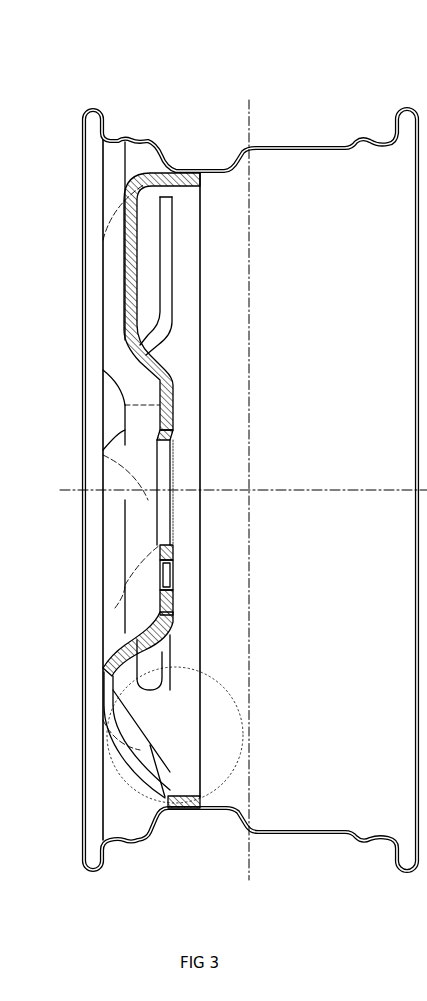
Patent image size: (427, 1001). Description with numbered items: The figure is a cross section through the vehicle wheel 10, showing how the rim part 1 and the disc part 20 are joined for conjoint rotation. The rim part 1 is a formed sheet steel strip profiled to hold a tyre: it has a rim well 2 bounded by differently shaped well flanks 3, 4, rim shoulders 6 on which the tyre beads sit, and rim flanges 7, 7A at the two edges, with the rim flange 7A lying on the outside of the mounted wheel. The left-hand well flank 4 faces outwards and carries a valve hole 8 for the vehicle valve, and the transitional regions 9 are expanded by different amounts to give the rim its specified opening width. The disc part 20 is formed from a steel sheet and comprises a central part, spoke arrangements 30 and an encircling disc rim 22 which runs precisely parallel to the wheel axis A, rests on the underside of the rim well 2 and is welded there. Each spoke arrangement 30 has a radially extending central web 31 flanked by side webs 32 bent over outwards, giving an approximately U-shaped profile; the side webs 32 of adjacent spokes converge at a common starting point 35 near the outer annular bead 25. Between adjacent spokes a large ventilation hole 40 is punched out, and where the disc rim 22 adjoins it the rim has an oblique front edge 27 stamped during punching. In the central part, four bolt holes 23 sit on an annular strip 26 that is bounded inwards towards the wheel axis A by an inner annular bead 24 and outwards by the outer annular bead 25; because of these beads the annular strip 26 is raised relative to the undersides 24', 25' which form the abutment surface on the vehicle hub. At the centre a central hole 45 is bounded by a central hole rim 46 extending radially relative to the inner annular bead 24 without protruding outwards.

The rim part 1 is at (211, 144).
The vehicle wheel 10 is at (267, 97).
The rim well 2 is at (226, 173).
The well flank 3 is at (249, 160).
The well flank 4 is at (167, 156).
The rim shoulder 6 is at (122, 141).
The rim flange 7 is at (404, 113).
The rim flange 7A is at (98, 113).
The valve hole 8 is at (165, 817).
The transitional region 9 is at (310, 148).
The disc part 20 is at (240, 258).
The disc rim 22 is at (186, 796).
The bolt hole 23 is at (166, 572).
The inner annular bead 24 is at (102, 429).
The underside of inner annular bead 24' is at (230, 440).
The outer annular bead 25 is at (102, 360).
The underside of outer annular bead 25' is at (234, 369).
The annular strip 26 is at (175, 399).
The oblique front edge 27 is at (165, 797).
The spoke arrangement 30 is at (99, 208).
The central web 31 is at (128, 270).
The side web 32 is at (113, 283).
The common starting point 35 is at (171, 606).
The ventilation hole 40 is at (123, 762).
The central hole 45 is at (158, 525).
The central hole rim 46 is at (166, 440).
The wheel axis A is at (362, 489).